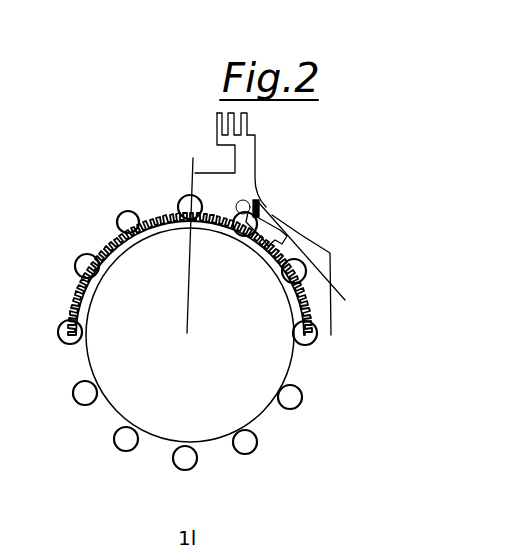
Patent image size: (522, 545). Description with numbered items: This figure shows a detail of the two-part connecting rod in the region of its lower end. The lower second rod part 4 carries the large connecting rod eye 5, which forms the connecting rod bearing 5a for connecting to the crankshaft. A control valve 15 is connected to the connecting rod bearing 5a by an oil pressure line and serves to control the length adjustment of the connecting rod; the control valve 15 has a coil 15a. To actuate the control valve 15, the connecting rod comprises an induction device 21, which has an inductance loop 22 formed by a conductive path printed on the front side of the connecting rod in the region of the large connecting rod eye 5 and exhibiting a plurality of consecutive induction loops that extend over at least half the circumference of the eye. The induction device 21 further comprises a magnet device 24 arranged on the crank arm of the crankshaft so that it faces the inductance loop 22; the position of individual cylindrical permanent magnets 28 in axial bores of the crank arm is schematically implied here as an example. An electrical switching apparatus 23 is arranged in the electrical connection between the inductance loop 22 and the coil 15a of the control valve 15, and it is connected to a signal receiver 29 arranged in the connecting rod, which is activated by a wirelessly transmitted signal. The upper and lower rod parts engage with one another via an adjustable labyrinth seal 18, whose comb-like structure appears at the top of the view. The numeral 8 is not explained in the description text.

The second rod part 4 is at (248, 175).
The large connecting rod eye 5 is at (207, 410).
The connecting rod bearing 5a is at (88, 298).
The roller 8 is at (46, 544).
The control valve 15 is at (238, 205).
The coil 15a is at (262, 205).
The labyrinth seal 18 is at (247, 127).
The induction device 21 is at (100, 213).
The inductance loop 22 is at (77, 290).
The electrical switching apparatus 23 is at (285, 225).
The magnet device 24 is at (265, 461).
The permanent magnets 28 is at (297, 410).
The signal receiver 29 is at (315, 263).